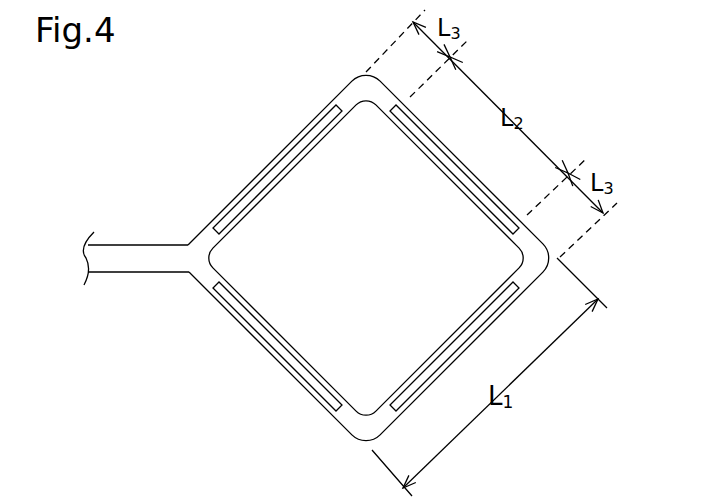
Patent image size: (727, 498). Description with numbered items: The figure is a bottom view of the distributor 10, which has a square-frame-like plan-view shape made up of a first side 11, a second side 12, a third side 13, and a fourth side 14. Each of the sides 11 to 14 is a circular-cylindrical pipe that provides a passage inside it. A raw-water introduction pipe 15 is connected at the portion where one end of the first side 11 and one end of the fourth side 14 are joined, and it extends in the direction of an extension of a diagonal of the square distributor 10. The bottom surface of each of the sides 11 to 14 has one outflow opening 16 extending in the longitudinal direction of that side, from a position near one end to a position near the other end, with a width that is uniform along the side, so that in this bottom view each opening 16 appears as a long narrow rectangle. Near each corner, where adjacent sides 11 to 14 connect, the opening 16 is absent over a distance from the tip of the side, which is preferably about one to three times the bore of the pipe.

The distributor 10 is at (211, 113).
The first side 11 is at (252, 343).
The second side 12 is at (457, 323).
The third side 13 is at (442, 182).
The fourth side 14 is at (275, 157).
The raw-water introduction pipe 15 is at (127, 273).
The outflow opening 16 is at (270, 179).